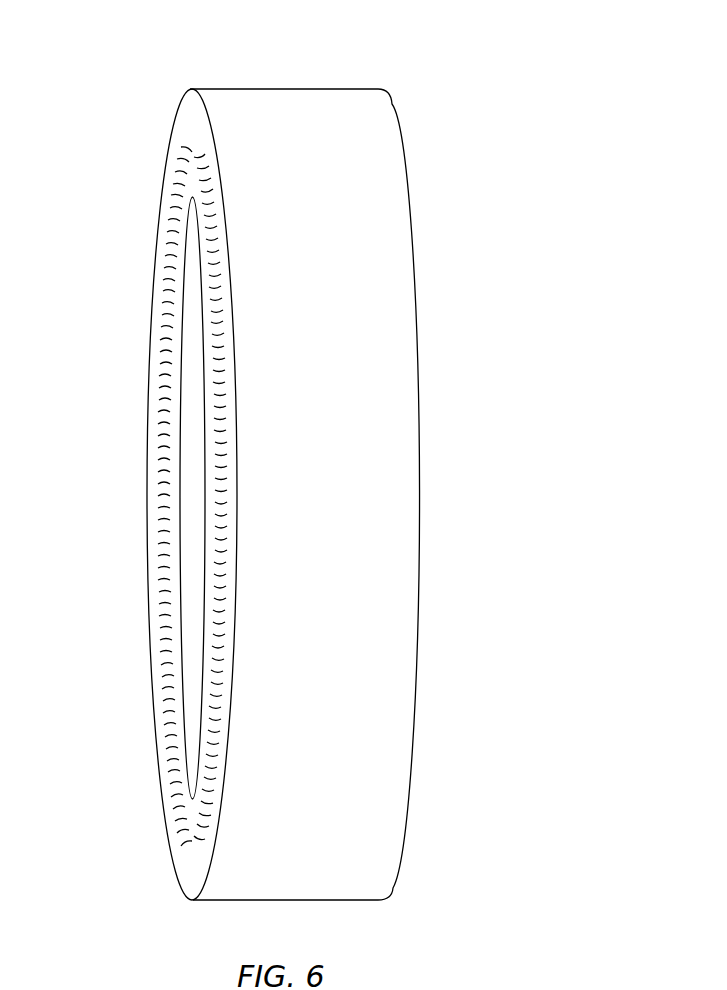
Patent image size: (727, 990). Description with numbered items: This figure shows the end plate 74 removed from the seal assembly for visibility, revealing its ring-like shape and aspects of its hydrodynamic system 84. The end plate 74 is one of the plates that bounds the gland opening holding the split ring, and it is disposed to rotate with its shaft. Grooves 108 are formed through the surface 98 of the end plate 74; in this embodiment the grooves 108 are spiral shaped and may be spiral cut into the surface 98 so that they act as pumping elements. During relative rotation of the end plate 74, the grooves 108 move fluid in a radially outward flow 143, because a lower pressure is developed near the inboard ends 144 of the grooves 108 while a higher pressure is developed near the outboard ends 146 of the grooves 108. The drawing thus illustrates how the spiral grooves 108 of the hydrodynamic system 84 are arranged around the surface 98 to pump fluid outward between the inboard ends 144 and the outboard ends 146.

The end plate 74 is at (231, 95).
The hydrodynamic system 84 is at (148, 685).
The surface 98 is at (186, 854).
The grooves 108 is at (162, 352).
The radially outward flow 143 is at (199, 152).
The inboard ends 144 is at (179, 184).
The outboard ends 146 is at (180, 172).